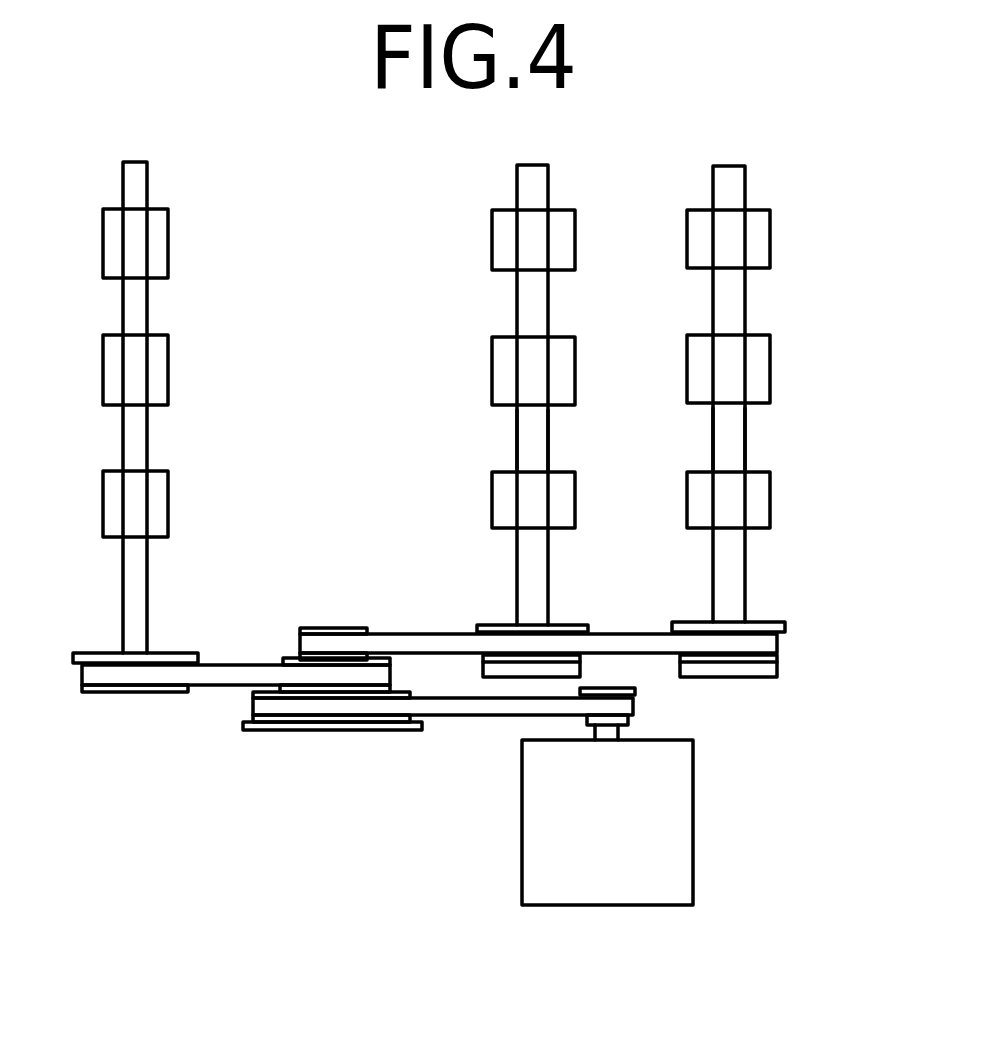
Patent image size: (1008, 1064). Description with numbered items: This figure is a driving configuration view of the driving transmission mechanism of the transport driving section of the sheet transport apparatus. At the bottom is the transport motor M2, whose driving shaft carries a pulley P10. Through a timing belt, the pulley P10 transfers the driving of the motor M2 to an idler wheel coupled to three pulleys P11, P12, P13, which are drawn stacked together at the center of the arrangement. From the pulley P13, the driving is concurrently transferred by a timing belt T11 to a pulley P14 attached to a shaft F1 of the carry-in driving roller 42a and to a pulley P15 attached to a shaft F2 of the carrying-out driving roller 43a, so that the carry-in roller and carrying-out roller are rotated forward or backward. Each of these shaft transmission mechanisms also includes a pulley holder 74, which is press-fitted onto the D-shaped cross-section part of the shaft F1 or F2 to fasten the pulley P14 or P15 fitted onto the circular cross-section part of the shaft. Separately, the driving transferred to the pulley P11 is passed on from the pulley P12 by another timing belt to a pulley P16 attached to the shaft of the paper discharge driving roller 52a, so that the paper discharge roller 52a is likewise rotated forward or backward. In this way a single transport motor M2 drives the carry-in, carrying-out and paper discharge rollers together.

The paper discharge driving roller 52a is at (160, 500).
The carrying-out driving roller 43a is at (565, 370).
The carry-in driving roller 42a is at (755, 387).
The carry-in roller driving shaft F1 is at (738, 438).
The carrying-out roller driving shaft F2 is at (540, 442).
The timing belt T11 is at (430, 638).
The pulley P10 is at (627, 723).
The pulley P11 is at (355, 723).
The pulley P12 is at (283, 660).
The pulley P13 is at (323, 626).
The carry-in roller driving pulley P14 is at (782, 624).
The carrying-out roller driving pulley P15 is at (583, 623).
The pulley P16 is at (145, 692).
The pulley holder 74 is at (762, 670).
The transport motor M2 is at (673, 802).